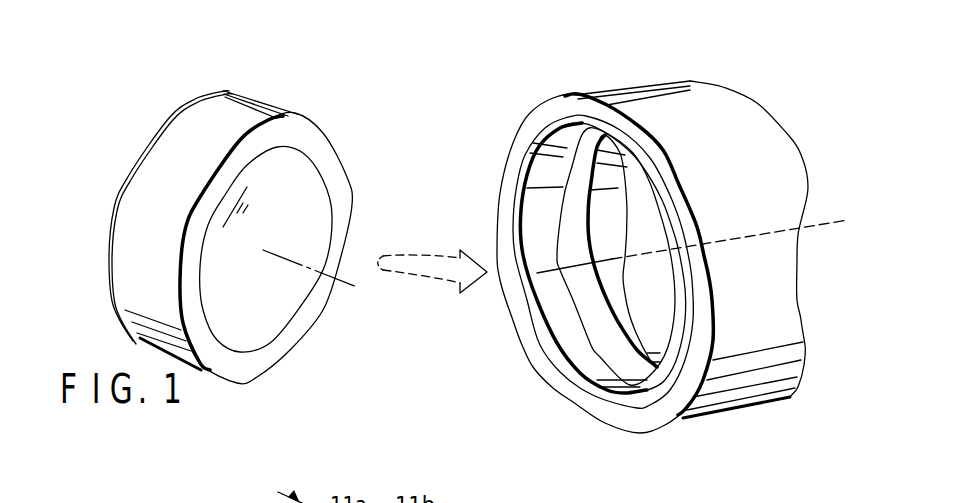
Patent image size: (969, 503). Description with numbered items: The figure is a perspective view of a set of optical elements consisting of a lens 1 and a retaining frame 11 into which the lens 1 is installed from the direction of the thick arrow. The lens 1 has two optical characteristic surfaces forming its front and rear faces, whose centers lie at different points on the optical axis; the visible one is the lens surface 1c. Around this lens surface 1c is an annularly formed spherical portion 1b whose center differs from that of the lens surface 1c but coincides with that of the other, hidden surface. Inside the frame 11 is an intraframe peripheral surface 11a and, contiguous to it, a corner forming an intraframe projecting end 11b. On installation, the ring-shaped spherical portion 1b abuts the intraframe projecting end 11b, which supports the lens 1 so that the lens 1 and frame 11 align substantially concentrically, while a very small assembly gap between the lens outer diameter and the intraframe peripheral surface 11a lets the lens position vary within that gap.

The lens 1 is at (223, 68).
The spherical portion 1b is at (341, 169).
The lens surface 1c is at (324, 214).
The frame 11 is at (695, 73).
The intraframe peripheral surface 11a is at (533, 217).
The intraframe projecting end 11b is at (588, 184).